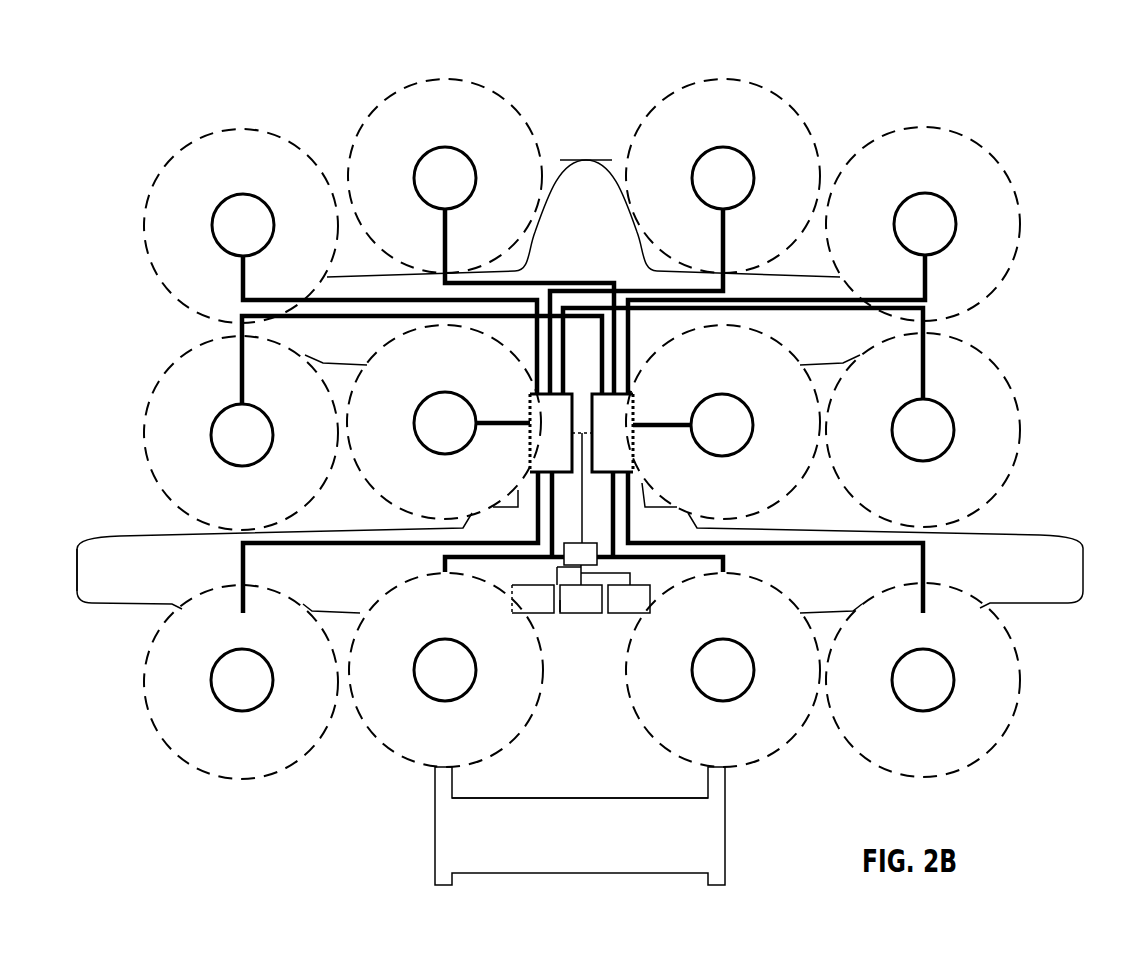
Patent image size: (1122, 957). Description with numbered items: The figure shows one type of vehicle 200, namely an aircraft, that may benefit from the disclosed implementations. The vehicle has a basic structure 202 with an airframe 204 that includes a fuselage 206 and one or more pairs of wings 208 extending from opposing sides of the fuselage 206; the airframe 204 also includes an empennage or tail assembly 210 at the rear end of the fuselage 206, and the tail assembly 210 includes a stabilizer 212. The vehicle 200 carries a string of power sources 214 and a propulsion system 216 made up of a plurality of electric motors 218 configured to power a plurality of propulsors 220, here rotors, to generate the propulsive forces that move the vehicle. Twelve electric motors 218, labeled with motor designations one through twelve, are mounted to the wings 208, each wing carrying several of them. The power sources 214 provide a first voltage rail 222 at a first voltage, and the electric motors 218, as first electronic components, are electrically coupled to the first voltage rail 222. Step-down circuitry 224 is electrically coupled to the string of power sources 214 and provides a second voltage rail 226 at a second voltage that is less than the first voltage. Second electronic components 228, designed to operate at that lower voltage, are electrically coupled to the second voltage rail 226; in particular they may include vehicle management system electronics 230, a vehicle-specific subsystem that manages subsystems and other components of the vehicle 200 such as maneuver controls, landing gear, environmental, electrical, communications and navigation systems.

The vehicle 200 is at (276, 54).
The basic structure 202 is at (323, 797).
The airframe 204 is at (570, 78).
The fuselage 206 is at (588, 159).
The wings 208 is at (235, 332).
The tail assembly 210 is at (372, 872).
The stabilizer 212 is at (605, 797).
The string of power sources 214 is at (646, 450).
The propulsion system 216 is at (1047, 291).
The electric motors 218 is at (237, 194).
The propulsors 220 is at (392, 96).
The first voltage rail 222 is at (590, 272).
The step-down circuitry 224 is at (563, 556).
The second voltage rail 226 is at (612, 571).
The second electronic components 228 is at (572, 628).
The vehicle management system electronics 230 is at (571, 613).